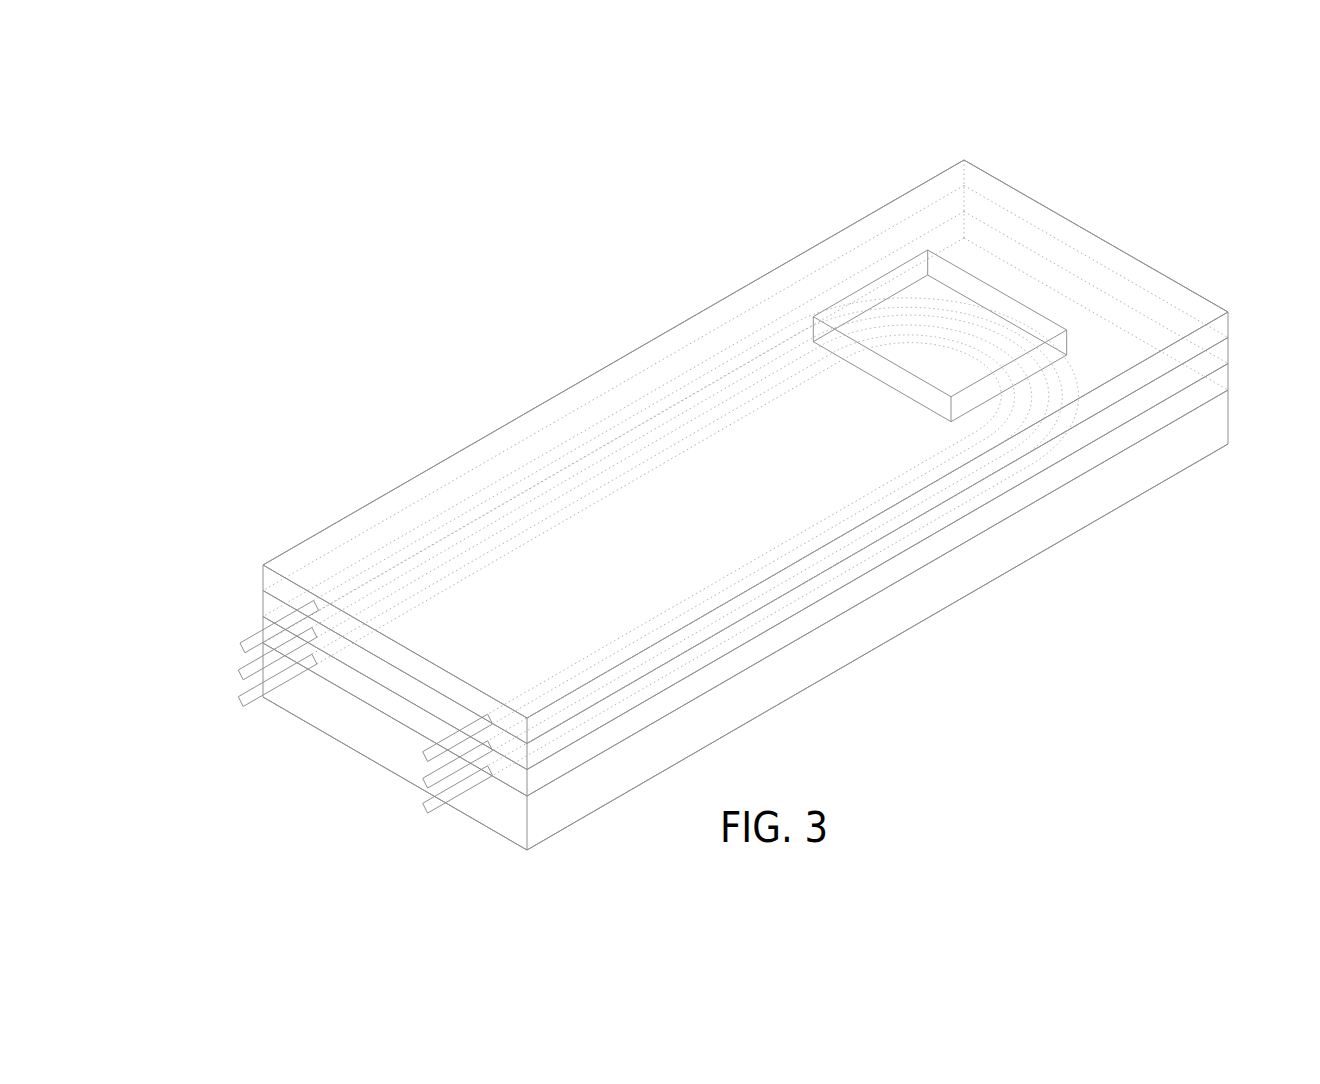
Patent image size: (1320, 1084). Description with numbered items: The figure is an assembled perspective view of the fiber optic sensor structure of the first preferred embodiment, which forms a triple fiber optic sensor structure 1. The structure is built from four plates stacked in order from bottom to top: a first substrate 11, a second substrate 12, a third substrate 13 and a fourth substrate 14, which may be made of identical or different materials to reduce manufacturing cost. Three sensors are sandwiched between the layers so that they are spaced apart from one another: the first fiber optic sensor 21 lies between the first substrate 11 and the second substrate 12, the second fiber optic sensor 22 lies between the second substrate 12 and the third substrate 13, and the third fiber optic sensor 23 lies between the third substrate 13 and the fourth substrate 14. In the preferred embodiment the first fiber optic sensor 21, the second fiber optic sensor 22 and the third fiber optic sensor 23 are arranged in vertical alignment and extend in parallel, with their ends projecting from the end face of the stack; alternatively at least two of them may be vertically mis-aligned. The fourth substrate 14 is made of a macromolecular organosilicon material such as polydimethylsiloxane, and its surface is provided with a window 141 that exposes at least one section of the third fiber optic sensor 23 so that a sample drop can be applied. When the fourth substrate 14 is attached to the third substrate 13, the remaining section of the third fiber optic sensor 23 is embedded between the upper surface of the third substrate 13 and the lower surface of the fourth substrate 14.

The triple fiber optic sensor structure 1 is at (668, 313).
The first substrate 11 is at (1027, 540).
The second substrate 12 is at (1062, 477).
The third substrate 13 is at (1123, 415).
The fourth substrate 14 is at (1177, 298).
The window 141 is at (997, 348).
The first fiber optic sensor 21 is at (257, 695).
The second fiber optic sensor 22 is at (240, 673).
The third fiber optic sensor 23 is at (250, 643).